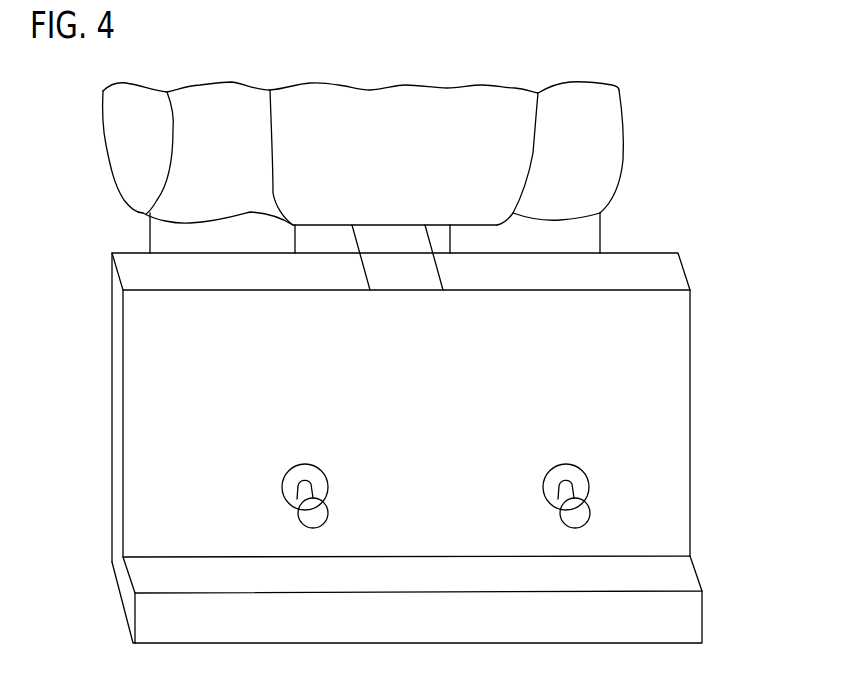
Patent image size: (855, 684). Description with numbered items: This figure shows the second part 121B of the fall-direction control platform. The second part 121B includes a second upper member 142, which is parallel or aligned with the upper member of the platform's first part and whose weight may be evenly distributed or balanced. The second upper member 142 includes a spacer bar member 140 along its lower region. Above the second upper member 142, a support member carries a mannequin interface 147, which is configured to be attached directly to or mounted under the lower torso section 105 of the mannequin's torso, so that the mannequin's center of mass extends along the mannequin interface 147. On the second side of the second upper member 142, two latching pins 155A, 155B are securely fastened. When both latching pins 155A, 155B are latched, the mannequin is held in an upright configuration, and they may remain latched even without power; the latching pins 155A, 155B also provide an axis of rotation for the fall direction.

The lower torso section 105 is at (412, 110).
The second part 121B is at (698, 146).
The mannequin interface 147 is at (393, 247).
The second upper member 142 is at (670, 365).
The latching pin 155A is at (592, 507).
The latching pin 155B is at (330, 507).
The spacer bar member 140 is at (680, 620).